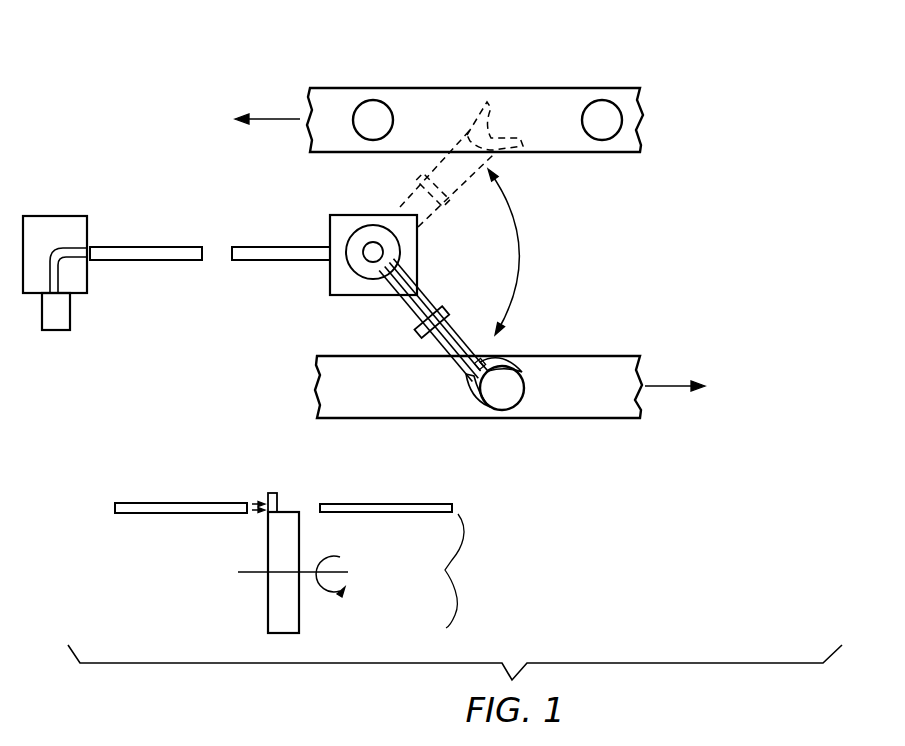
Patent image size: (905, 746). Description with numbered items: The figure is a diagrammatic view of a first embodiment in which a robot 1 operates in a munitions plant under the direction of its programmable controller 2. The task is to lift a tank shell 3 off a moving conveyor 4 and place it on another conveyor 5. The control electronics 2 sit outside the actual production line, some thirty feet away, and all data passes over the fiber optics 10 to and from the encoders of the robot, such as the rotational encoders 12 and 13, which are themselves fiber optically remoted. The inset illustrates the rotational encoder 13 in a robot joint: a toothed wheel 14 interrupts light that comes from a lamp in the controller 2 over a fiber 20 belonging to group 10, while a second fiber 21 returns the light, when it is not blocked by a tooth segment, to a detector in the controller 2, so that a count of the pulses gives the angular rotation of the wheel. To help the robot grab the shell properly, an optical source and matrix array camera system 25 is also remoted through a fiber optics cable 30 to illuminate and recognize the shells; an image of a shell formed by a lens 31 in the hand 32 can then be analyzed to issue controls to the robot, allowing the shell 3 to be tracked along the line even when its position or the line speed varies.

The robot 1 is at (330, 214).
The programmable controller 2 is at (88, 222).
The tank shell 3 is at (370, 102).
The moving conveyor 4 is at (412, 88).
The conveyor 5 is at (410, 418).
The fiber optics 10 is at (263, 262).
The rotational encoder 12 is at (370, 257).
The rotational encoder 13 is at (425, 328).
The toothed wheel 14 is at (268, 546).
The fiber 20 is at (197, 503).
The second fiber 21 is at (353, 504).
The optical source and matrix array camera system 25 is at (70, 322).
The fiber optics cable 30 is at (458, 337).
The lens 31 is at (483, 363).
The hand 32 is at (518, 366).